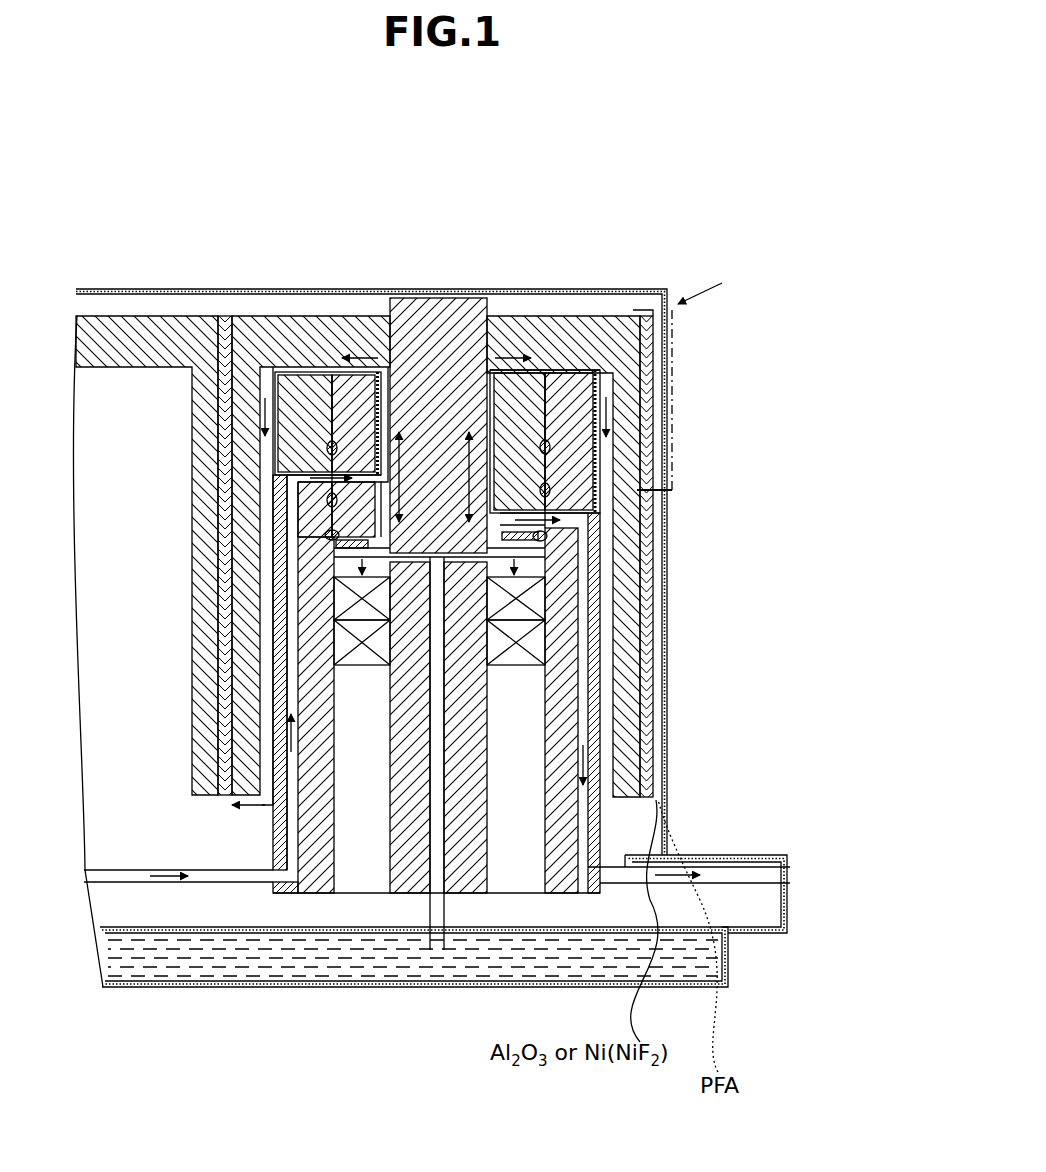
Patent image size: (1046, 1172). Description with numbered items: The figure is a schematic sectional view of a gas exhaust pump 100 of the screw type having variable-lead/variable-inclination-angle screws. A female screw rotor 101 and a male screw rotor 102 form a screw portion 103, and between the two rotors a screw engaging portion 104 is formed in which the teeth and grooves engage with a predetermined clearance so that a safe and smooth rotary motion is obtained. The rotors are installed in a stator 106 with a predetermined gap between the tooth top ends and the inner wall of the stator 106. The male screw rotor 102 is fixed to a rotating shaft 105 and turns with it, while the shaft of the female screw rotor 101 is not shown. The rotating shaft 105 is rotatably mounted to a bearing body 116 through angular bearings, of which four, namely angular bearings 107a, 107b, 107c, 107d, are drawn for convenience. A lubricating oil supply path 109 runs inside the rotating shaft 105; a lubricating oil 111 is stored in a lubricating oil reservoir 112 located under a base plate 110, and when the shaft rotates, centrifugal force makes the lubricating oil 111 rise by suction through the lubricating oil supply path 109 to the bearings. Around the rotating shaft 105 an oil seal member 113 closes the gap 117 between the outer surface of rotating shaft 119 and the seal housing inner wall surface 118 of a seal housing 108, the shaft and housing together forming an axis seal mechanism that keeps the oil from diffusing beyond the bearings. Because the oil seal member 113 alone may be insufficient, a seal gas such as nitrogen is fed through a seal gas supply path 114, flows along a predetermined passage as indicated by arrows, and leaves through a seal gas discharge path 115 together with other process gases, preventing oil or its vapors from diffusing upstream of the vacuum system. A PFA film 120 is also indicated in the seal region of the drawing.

The gas exhaust pump 100 is at (525, 224).
The female screw rotor 101 is at (115, 316).
The male screw rotor 102 is at (288, 316).
The screw portion 103 is at (635, 316).
The screw engaging portion 104 is at (236, 316).
The rotating shaft 105 is at (416, 350).
The stator 106 is at (673, 368).
The angular bearing 107a is at (432, 568).
The angular bearing 107b is at (388, 656).
The angular bearing 107c is at (518, 610).
The angular bearing 107d is at (518, 656).
The seal housing 108 is at (357, 395).
The lubricating oil supply path 109 is at (440, 946).
The base plate 110 is at (783, 912).
The lubricating oil 111 is at (313, 968).
The lubricating oil reservoir 112 is at (134, 954).
The oil seal member 113 is at (330, 540).
The seal gas supply path 114 is at (104, 876).
The seal gas discharge path 115 is at (724, 878).
The bearing body 116 is at (553, 687).
The gap 117 is at (378, 405).
The seal housing inner wall surface 118 is at (378, 440).
The outer surface of rotating shaft 119 is at (486, 396).
The PFA film 120 is at (500, 446).